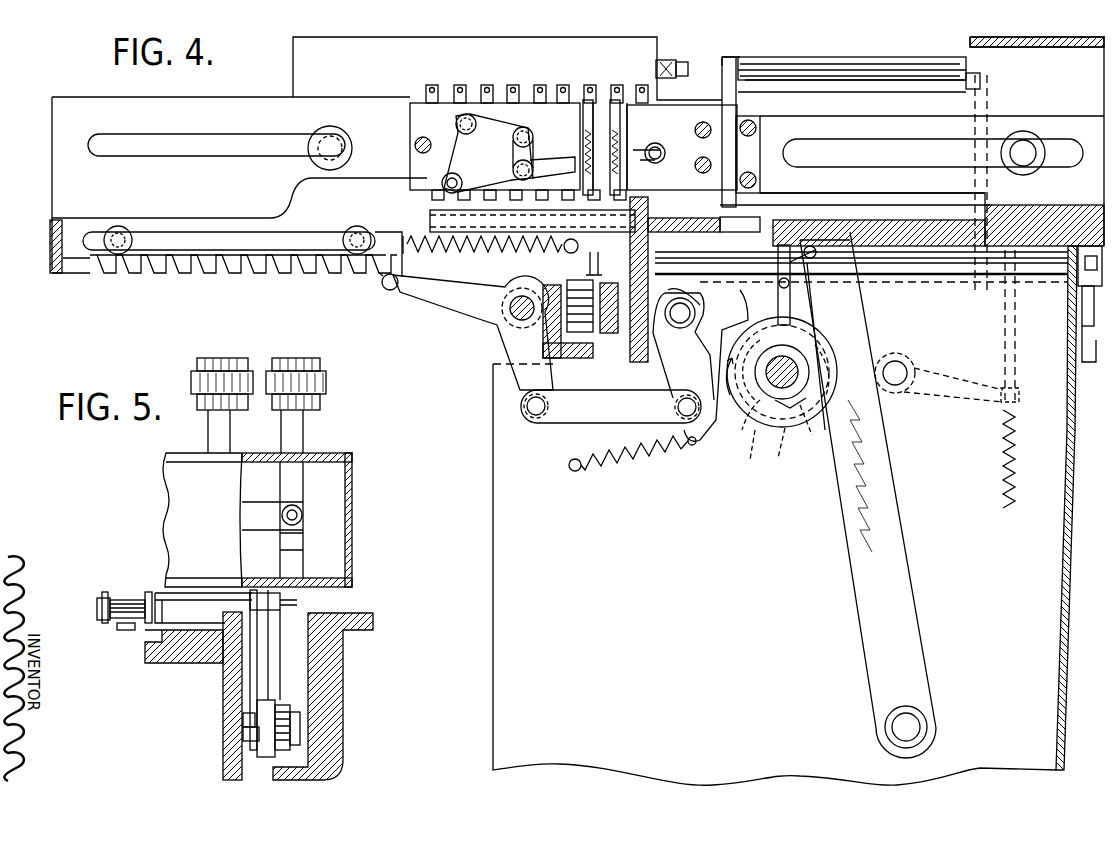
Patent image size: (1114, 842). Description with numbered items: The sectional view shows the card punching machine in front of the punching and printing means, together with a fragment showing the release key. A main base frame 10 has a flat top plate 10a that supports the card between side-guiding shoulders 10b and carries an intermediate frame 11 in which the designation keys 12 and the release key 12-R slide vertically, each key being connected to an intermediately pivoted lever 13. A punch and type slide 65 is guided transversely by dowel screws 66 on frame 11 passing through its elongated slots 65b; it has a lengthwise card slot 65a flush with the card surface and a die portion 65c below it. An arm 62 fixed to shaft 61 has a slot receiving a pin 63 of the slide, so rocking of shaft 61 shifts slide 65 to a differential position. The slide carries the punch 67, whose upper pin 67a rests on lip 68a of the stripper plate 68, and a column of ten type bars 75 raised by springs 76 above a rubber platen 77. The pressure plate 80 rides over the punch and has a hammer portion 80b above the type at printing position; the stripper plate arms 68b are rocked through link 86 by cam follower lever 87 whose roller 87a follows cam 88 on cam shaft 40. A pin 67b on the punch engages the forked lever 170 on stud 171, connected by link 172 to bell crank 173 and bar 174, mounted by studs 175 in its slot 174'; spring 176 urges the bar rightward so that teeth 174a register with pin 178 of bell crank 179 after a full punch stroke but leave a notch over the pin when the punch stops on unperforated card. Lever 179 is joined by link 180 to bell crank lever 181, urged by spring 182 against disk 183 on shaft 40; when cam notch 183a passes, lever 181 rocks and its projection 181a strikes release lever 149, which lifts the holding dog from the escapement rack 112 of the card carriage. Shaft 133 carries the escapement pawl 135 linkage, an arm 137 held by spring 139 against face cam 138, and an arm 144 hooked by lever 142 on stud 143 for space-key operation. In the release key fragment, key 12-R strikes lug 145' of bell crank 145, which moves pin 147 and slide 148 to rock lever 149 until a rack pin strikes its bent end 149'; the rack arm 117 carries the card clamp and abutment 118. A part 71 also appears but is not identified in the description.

In FIG. 4, the main base frame 10 is at (630, 338).
In FIG. 5, the main base frame 10 is at (232, 692).
In FIG. 4, the top flat plate 10a is at (856, 222).
In FIG. 5, the top flat plate 10a is at (178, 633).
In FIG. 4, the side-guiding shoulders 10b is at (652, 212).
In FIG. 4, the intermediate frame 11 is at (592, 50).
In FIG. 5, the intermediate frame 11 is at (354, 515).
In FIG. 5, the designation key 12 is at (224, 368).
In FIG. 5, the release key 12-R is at (306, 375).
In FIG. 5, the intermediately pivoted lever 13 is at (255, 512).
In FIG. 4, the cam shaft 40 is at (777, 367).
In FIG. 4, the shaft 61 is at (908, 732).
In FIG. 4, the arm 62 is at (862, 343).
In FIG. 4, the pin 63 is at (845, 272).
In FIG. 4, the punch and type slide 65 is at (64, 156).
In FIG. 4, the card slot 65a is at (918, 203).
In FIG. 4, the elongated slots 65b is at (146, 135).
In FIG. 4, the die portion 65c is at (758, 224).
In FIG. 4, the dowel screws 66 is at (339, 138).
In FIG. 4, the punch 67 is at (738, 100).
In FIG. 4, the transversely extending pin 67a is at (736, 58).
In FIG. 4, the forwardly projecting pin 67b is at (756, 142).
In FIG. 4, the stripper plate 68 is at (886, 70).
In FIG. 4, the depressed angular lip 68a is at (812, 86).
In FIG. 4, the bent side arms 68b is at (676, 62).
In FIG. 4, the cam 71 is at (828, 357).
In FIG. 4, the type bars 75 is at (486, 86).
In FIG. 4, the springs 76 is at (610, 138).
In FIG. 4, the rubber platen 77 is at (434, 216).
In FIG. 4, the pressure plate 80 is at (786, 58).
In FIG. 4, the hammer portion 80b is at (657, 70).
In FIG. 4, the link 86 is at (1006, 346).
In FIG. 4, the cam follower lever 87 is at (958, 412).
In FIG. 4, the roller 87a is at (787, 456).
In FIG. 4, the cam 88 is at (743, 428).
In FIG. 4, the escapement rack 112 is at (585, 352).
In FIG. 5, the escapement rack 112 is at (262, 750).
In FIG. 5, the parallel arm 117 is at (160, 594).
In FIG. 5, the card clamp and abutment 118 is at (108, 626).
In FIG. 4, the shaft 133 is at (950, 266).
In FIG. 4, the escapement pawl 135 is at (587, 243).
In FIG. 4, the arm 137 is at (805, 290).
In FIG. 4, the face cam 138 is at (812, 386).
In FIG. 4, the spring 139 is at (802, 270).
In FIG. 4, the lever 142 is at (1082, 329).
In FIG. 4, the stud 143 is at (1084, 364).
In FIG. 4, the arm 144 is at (1078, 290).
In FIG. 5, the bell crank lever 145 is at (282, 670).
In FIG. 5, the lug 145' is at (284, 609).
In FIG. 5, the pin 147 is at (243, 722).
In FIG. 5, the horizontal slide 148 is at (244, 740).
In FIG. 4, the escapement release lever 149 is at (698, 295).
In FIG. 4, the downwardly bent end 149' is at (564, 264).
In FIG. 4, the lever 170 is at (560, 163).
In FIG. 4, the stud 171 is at (658, 144).
In FIG. 4, the link 172 is at (534, 150).
In FIG. 4, the bell crank 173 is at (478, 132).
In FIG. 4, the bar 174 is at (226, 236).
In FIG. 4, the elongated slot 174' is at (241, 273).
In FIG. 4, the teeth 174a is at (218, 264).
In FIG. 4, the studs 175 is at (122, 228).
In FIG. 4, the light spring 176 is at (414, 270).
In FIG. 4, the pin 178 is at (386, 286).
In FIG. 4, the bell crank 179 is at (516, 348).
In FIG. 4, the link 180 is at (590, 410).
In FIG. 4, the bell crank lever 181 is at (668, 376).
In FIG. 4, the projection 181a is at (779, 283).
In FIG. 4, the spring 182 is at (626, 466).
In FIG. 4, the disk 183 is at (799, 427).
In FIG. 4, the cam notch 183a is at (746, 457).